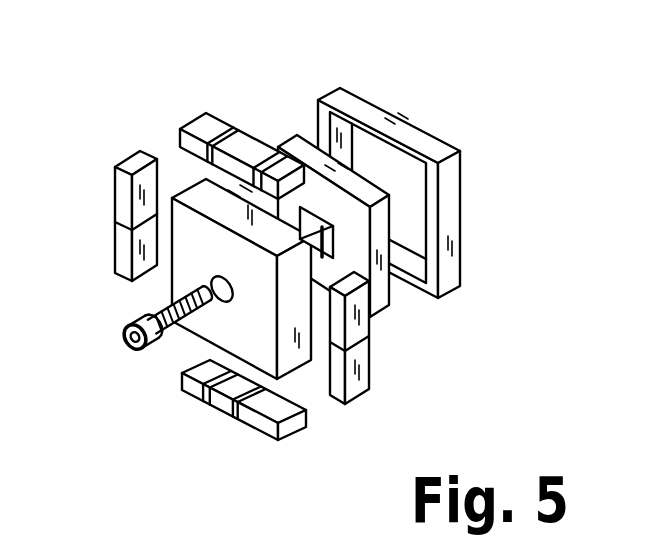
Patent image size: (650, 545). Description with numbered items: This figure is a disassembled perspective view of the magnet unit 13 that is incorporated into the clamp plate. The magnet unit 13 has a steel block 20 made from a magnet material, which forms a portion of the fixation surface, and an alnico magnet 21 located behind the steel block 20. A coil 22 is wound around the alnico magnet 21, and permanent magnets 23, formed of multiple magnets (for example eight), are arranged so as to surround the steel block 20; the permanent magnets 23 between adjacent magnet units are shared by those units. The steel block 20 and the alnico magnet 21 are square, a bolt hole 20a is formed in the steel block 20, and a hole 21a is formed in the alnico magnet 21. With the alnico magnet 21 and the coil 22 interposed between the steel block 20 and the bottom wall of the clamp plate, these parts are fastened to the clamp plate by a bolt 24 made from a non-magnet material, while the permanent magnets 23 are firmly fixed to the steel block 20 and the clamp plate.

The magnet unit 13 is at (143, 92).
The steel block 20 is at (223, 338).
The bolt hole 20a is at (140, 268).
The alnico magnet 21 is at (386, 298).
The hole 21a is at (303, 242).
The coil 22 is at (455, 248).
The permanent magnets 23 is at (118, 197).
The bolt 24 is at (152, 355).